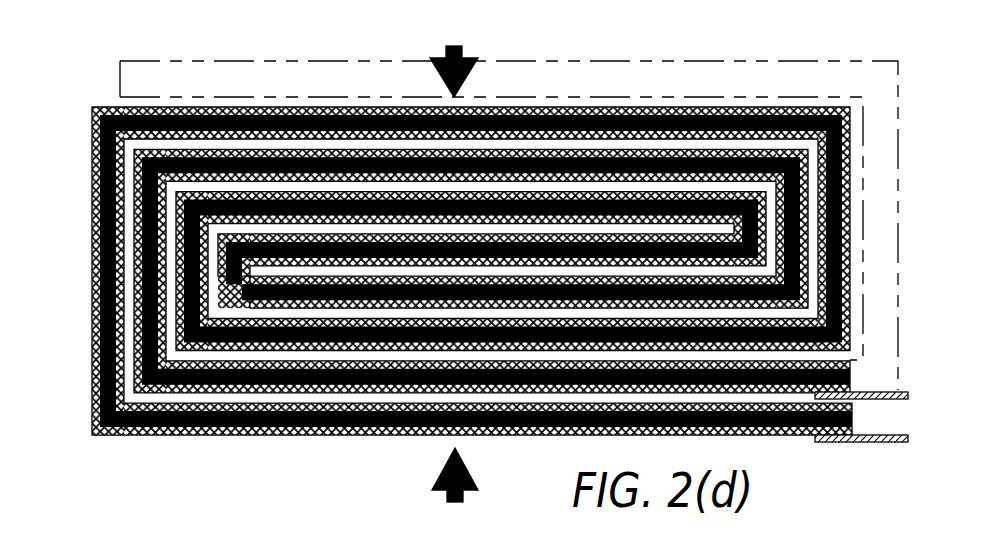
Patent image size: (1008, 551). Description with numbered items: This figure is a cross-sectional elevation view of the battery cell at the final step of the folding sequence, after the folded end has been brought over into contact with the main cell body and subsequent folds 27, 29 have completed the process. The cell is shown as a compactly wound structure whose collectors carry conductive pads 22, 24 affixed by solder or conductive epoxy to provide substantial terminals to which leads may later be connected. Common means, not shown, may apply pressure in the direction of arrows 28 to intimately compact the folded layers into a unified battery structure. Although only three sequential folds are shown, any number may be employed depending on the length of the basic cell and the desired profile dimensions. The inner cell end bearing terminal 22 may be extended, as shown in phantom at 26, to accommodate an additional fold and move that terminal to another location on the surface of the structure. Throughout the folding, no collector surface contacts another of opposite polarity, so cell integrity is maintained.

The conductive pad 22 is at (873, 391).
The conductive pad 24 is at (888, 443).
The phantom extension of inner cell end 26 is at (306, 61).
The fold 27 is at (860, 220).
The arrows 28 is at (454, 269).
The fold 29 is at (71, 251).